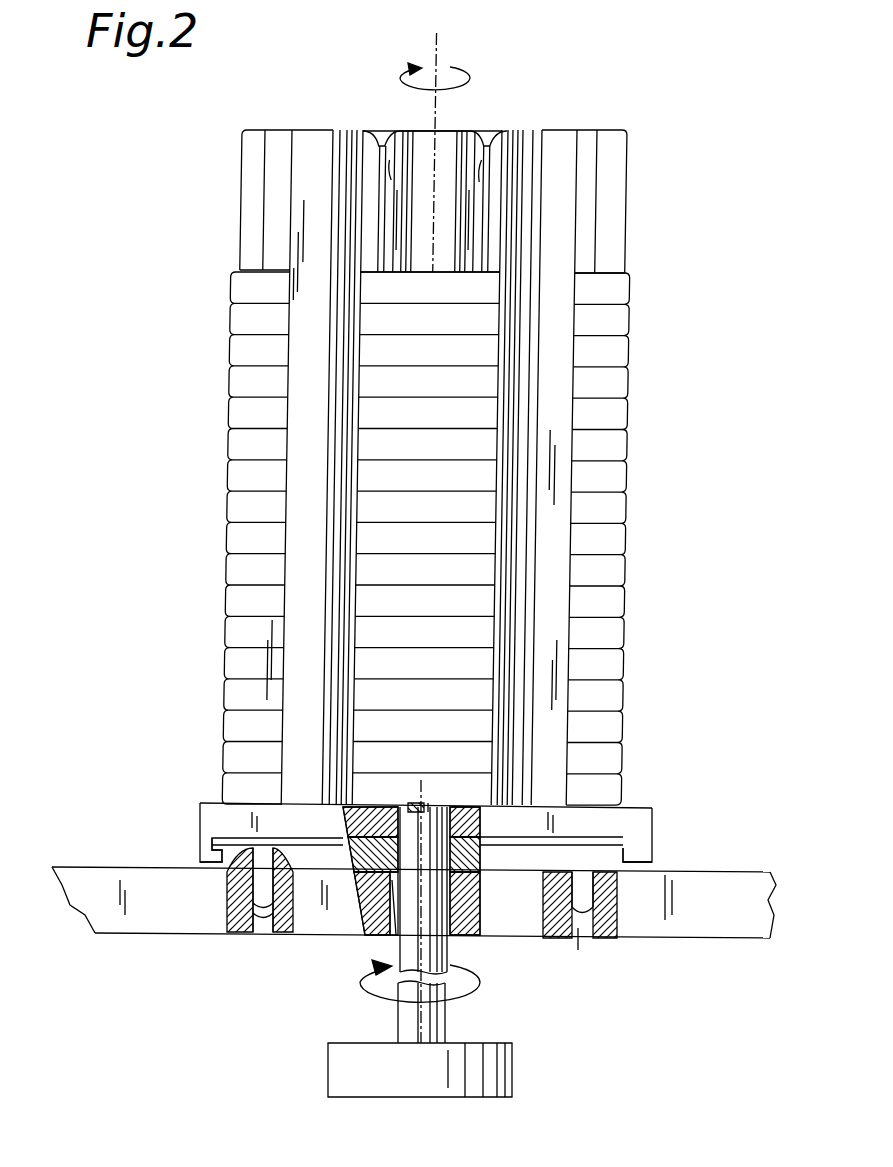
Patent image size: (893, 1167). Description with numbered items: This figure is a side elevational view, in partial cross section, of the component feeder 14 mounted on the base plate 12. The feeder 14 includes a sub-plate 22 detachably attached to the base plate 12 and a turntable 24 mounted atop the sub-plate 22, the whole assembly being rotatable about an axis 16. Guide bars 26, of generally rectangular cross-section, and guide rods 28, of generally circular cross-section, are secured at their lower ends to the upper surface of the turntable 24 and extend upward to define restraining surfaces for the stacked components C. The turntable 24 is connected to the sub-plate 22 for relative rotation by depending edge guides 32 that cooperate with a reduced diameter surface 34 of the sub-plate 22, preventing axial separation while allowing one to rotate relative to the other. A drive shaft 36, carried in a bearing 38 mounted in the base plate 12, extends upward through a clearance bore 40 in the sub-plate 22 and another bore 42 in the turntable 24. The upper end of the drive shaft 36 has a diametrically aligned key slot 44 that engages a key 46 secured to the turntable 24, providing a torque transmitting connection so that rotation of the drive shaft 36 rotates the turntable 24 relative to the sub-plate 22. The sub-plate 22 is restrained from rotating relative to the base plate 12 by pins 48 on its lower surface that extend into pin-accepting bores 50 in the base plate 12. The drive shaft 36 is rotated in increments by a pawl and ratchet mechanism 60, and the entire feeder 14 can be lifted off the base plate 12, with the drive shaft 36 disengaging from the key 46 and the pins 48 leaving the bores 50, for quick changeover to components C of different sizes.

The base plate 12 is at (733, 920).
The component feeder 14 is at (684, 171).
The axis of rotation 16 is at (452, 44).
The sub-plate 22 is at (658, 868).
The turntable 24 is at (305, 836).
The guide bars 26 is at (326, 176).
The guide rods 28 is at (386, 140).
The depending edge guides 32 is at (200, 848).
The reduced diameter surface 34 is at (622, 880).
The drive shaft 36 is at (447, 1020).
The bearing 38 is at (450, 942).
The clearance bore 40 is at (486, 860).
The bore 42 is at (482, 826).
The key slot 44 is at (432, 806).
The key 46 is at (412, 806).
The pins 48 is at (230, 895).
The pin-accepting bores 50 is at (235, 918).
The pawl and ratchet mechanism 60 is at (329, 1076).
The components C is at (237, 356).